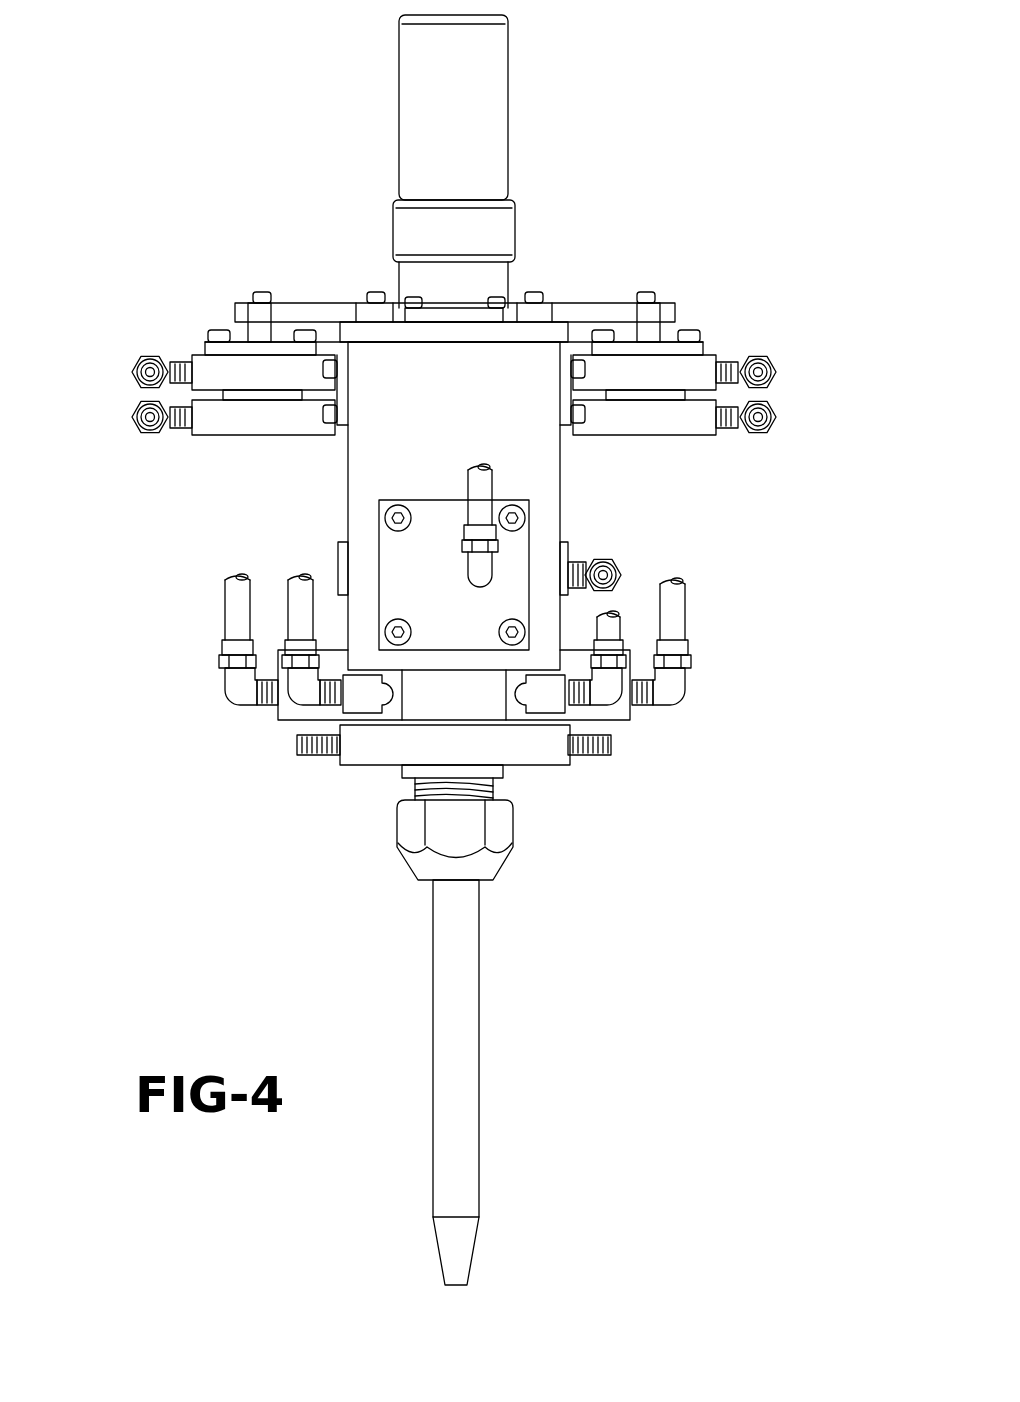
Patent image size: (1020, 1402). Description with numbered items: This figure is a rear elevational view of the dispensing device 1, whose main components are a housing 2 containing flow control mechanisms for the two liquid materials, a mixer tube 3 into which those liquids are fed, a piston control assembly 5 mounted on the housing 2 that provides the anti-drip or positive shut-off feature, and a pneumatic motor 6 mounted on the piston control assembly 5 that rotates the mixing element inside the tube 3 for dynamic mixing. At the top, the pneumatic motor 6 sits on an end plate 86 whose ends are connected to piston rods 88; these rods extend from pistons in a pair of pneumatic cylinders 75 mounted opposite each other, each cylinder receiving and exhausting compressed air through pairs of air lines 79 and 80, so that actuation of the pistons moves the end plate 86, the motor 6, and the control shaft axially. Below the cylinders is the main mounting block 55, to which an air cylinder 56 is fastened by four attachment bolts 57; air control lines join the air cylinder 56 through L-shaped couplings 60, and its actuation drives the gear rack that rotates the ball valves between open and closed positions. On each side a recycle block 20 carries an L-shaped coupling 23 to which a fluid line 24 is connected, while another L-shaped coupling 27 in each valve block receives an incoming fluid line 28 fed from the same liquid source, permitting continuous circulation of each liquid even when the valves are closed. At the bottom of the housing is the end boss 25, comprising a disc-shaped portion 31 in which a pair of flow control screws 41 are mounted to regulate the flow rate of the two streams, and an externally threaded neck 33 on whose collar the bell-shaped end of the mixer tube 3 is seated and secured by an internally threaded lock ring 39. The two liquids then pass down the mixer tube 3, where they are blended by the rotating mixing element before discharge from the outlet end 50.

The dispensing device 1 is at (624, 142).
The housing 2 is at (578, 473).
The mixer tube 3 is at (478, 1078).
The piston control assembly 5 is at (212, 458).
The pneumatic motor 6 is at (500, 74).
The recycle block 20 is at (288, 716).
The L-shaped coupling 23 is at (242, 698).
The fluid line 24 is at (233, 625).
The end boss 25 is at (348, 775).
The L-shaped coupling 27 is at (358, 700).
The incoming fluid line 28 is at (297, 620).
The disc-shaped portion 31 is at (557, 762).
The externally threaded neck 33 is at (482, 790).
The lock ring 39 is at (500, 850).
The flow control screw 41 is at (316, 748).
The outlet end 50 is at (460, 1285).
The main mounting block 55 is at (365, 470).
The air cylinder 56 is at (460, 620).
The attachment bolt 57 is at (398, 518).
The L-shaped coupling 60 is at (475, 578).
The pneumatic cylinder 75 is at (213, 368).
The air line 79 is at (131, 372).
The air line 80 is at (131, 416).
The end plate 86 is at (585, 318).
The piston rod 88 is at (258, 330).